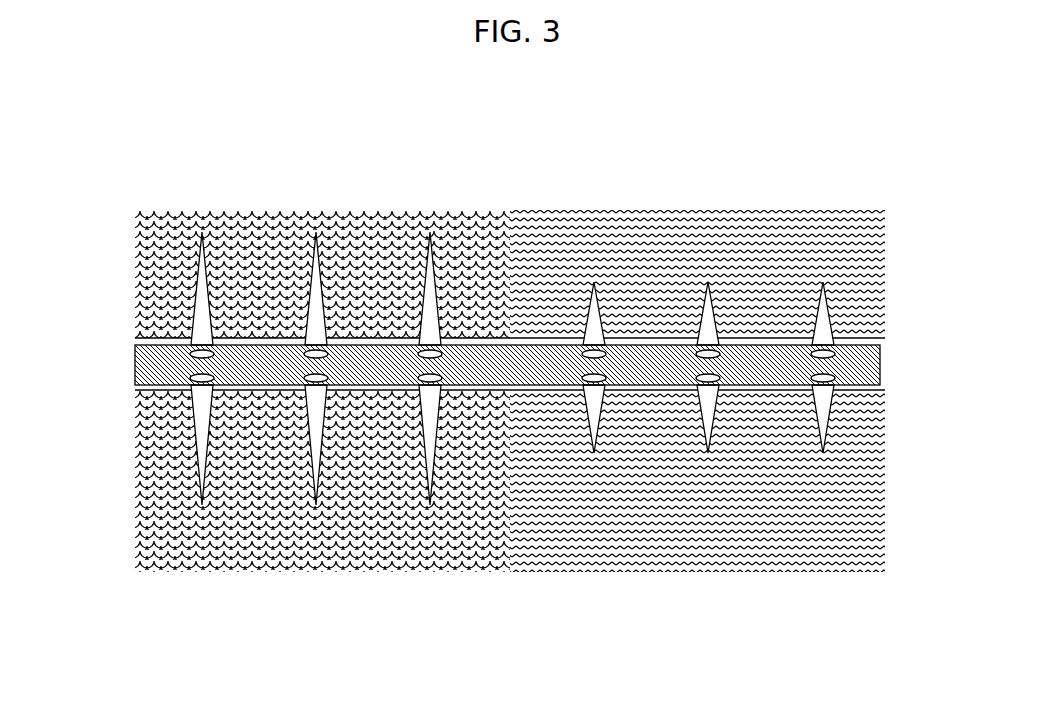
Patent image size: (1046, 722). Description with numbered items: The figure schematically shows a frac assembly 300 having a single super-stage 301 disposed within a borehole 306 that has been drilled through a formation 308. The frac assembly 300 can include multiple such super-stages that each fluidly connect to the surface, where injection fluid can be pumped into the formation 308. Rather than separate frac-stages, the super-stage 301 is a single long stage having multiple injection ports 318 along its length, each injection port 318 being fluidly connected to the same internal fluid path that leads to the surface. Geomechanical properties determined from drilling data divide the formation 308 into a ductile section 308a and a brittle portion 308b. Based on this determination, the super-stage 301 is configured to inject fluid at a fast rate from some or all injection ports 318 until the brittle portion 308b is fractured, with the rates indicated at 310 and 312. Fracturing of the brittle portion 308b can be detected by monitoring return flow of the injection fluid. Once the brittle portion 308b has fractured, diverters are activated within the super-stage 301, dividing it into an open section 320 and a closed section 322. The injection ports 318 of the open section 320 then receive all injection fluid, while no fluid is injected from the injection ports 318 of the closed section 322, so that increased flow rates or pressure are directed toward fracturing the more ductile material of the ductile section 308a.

The frac assembly 300 is at (122, 353).
The super-stage 301 is at (138, 146).
The borehole 306 is at (875, 389).
The formation 308 is at (510, 356).
The ductile section 308a is at (322, 391).
The brittle portion 308b is at (697, 391).
The injection rate indication 310 is at (200, 428).
The injection rate indication 312 is at (822, 327).
The injection port 318 is at (425, 380).
The open section 320 is at (140, 212).
The closed section 322 is at (880, 214).